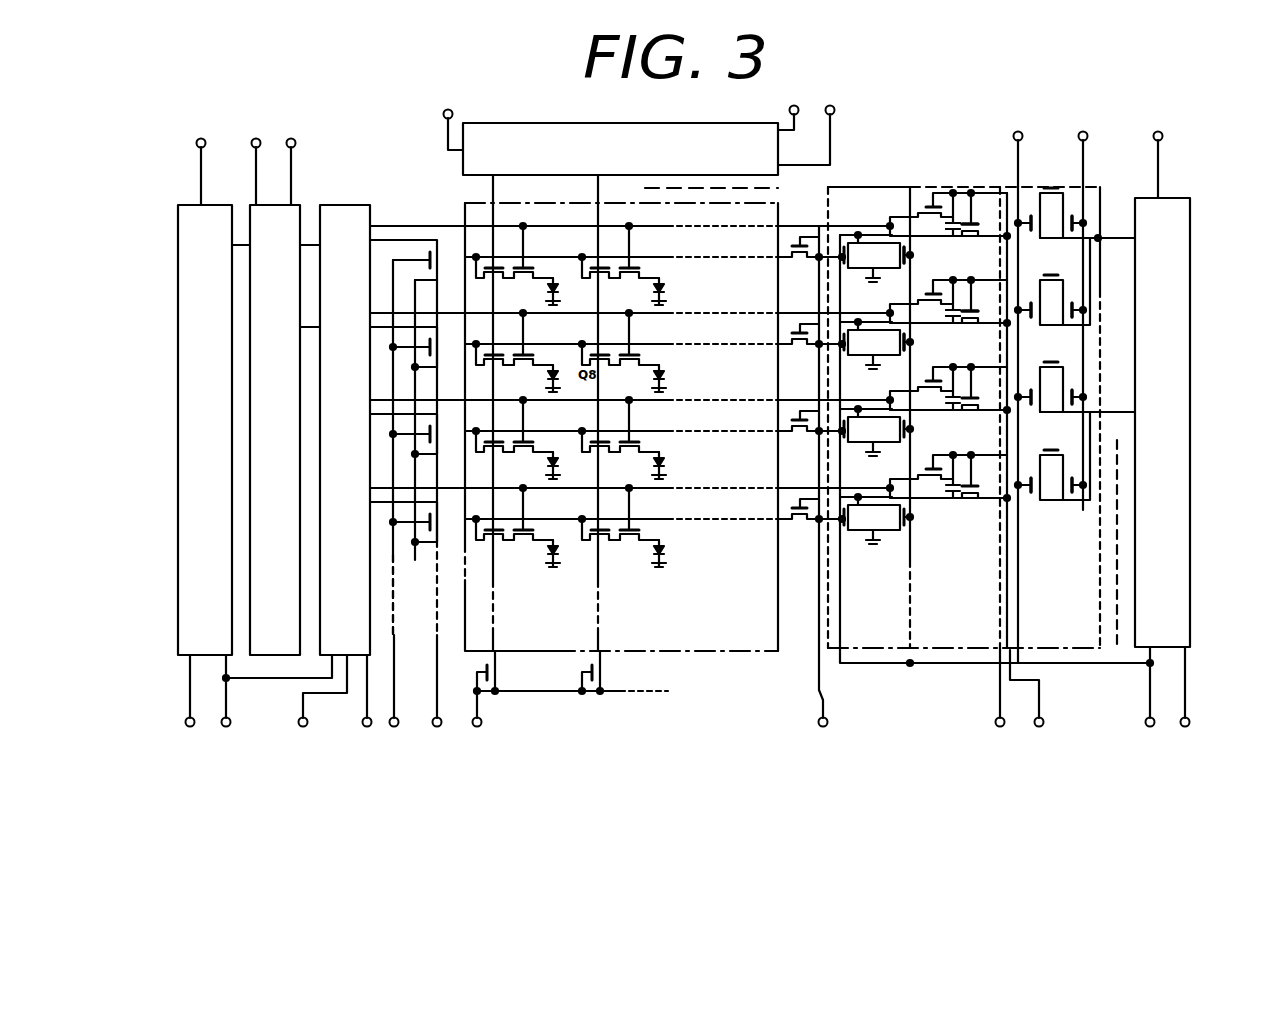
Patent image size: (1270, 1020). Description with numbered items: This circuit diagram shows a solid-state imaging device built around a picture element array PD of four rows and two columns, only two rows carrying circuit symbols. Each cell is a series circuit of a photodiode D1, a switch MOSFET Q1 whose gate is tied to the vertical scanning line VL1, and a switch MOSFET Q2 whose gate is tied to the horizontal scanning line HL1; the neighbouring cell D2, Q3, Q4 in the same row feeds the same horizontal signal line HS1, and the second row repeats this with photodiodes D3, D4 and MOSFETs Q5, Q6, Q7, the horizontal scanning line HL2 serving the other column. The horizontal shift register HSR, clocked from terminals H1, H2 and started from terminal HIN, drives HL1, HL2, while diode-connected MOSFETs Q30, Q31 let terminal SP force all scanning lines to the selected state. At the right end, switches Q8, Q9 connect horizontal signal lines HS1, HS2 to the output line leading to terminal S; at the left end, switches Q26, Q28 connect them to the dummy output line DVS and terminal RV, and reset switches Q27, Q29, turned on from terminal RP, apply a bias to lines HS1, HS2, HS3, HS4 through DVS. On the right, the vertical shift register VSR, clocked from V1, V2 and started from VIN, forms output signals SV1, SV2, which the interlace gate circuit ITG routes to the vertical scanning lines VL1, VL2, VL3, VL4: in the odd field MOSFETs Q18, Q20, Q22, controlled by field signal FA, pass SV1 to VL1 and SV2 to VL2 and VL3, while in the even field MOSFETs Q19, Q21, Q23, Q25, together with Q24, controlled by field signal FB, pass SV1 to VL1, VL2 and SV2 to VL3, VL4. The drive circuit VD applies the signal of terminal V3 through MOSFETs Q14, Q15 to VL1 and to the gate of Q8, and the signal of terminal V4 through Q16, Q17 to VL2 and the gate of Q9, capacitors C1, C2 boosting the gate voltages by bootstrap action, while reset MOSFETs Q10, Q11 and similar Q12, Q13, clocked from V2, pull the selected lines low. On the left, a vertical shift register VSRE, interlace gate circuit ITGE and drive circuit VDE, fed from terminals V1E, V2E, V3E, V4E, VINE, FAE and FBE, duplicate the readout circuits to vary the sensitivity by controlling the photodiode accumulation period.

The vertical shift register for sensitivity control VSRE is at (185, 197).
The interlace gate circuit for sensitivity control ITGE is at (300, 205).
The drive circuit for sensitivity control VDE is at (370, 205).
The horizontal shift register HSR is at (463, 123).
The vertical shift register VSR is at (1190, 198).
The picture element array PD is at (583, 752).
The drive circuit VD is at (845, 778).
The interlace gate circuit ITG is at (1073, 752).
The horizontal scanning line HL1 is at (507, 413).
The horizontal scanning line HL2 is at (688, 413).
The vertical scanning line VL1 is at (630, 218).
The vertical scanning line VL2 is at (630, 305).
The vertical scanning line VL3 is at (630, 392).
The vertical scanning line VL4 is at (630, 480).
The horizontal signal line HS1 is at (672, 258).
The horizontal signal line HS2 is at (672, 345).
The horizontal signal line HS3 is at (672, 432).
The horizontal signal line HS4 is at (672, 520).
The output signal SV1 is at (1087, 232).
The output signal SV2 is at (1087, 404).
The dummy output line DVS is at (394, 688).
The switch MOSFET Q1 is at (533, 259).
The switch MOSFET Q2 is at (493, 274).
The switch MOSFET Q3 is at (638, 259).
The switch MOSFET Q4 is at (599, 274).
The transistor Q5 is at (533, 346).
The switch MOSFET Q6 is at (493, 361).
The transistor Q7 is at (638, 346).
The switch MOSFET Q8 is at (813, 255).
The switch MOSFET Q9 is at (813, 342).
The reset MOSFET Q10 is at (876, 259).
The reset MOSFET Q11 is at (891, 267).
The transistor Q12 is at (876, 346).
The transistor Q13 is at (891, 354).
The switch MOSFET Q14 is at (948, 214).
The switch MOSFET Q15 is at (971, 237).
The switch MOSFET Q16 is at (948, 296).
The switch MOSFET Q17 is at (971, 324).
The switch MOSFET Q18 is at (1050, 205).
The switch MOSFET Q19 is at (1051, 220).
The switch MOSFET Q20 is at (1052, 281).
The switch MOSFET Q21 is at (1051, 307).
The switch MOSFET Q22 is at (1050, 386).
The switch MOSFET Q23 is at (1051, 394).
The transistor Q24 is at (1052, 456).
The switch MOSFET Q25 is at (1051, 482).
The switch MOSFET Q26 is at (417, 256).
The reset switch MOSFET Q27 is at (439, 283).
The switch MOSFET Q28 is at (417, 343).
The reset switch MOSFET Q29 is at (438, 370).
The diode-connected MOSFET Q30 is at (502, 672).
The diode-connected MOSFET Q31 is at (605, 672).
The photodiode D1 is at (554, 283).
The photodiode D2 is at (661, 283).
The photo-diode D3 is at (554, 370).
The photo-diode D4 is at (661, 370).
The capacitor C1 is at (944, 230).
The capacitor C2 is at (944, 317).
The terminal HIN is at (448, 121).
The terminal H1 is at (808, 128).
The terminal H2 is at (789, 110).
The terminal VINE is at (199, 163).
The terminal FAE is at (255, 163).
The terminal FBE is at (291, 163).
The terminal V1E is at (191, 701).
The terminal V2E is at (272, 701).
The terminal V3E is at (318, 701).
The terminal V4E is at (366, 701).
The terminal RV is at (394, 504).
The terminal RP is at (437, 514).
The terminal SP is at (567, 718).
The terminal S is at (823, 487).
The terminal V1 is at (1186, 697).
The terminal V2 is at (1149, 697).
The terminal V3 is at (1029, 699).
The terminal V4 is at (1000, 698).
The odd number field signal FA is at (1016, 389).
The even number field signal FB is at (1081, 313).
The terminal VIN is at (1157, 157).